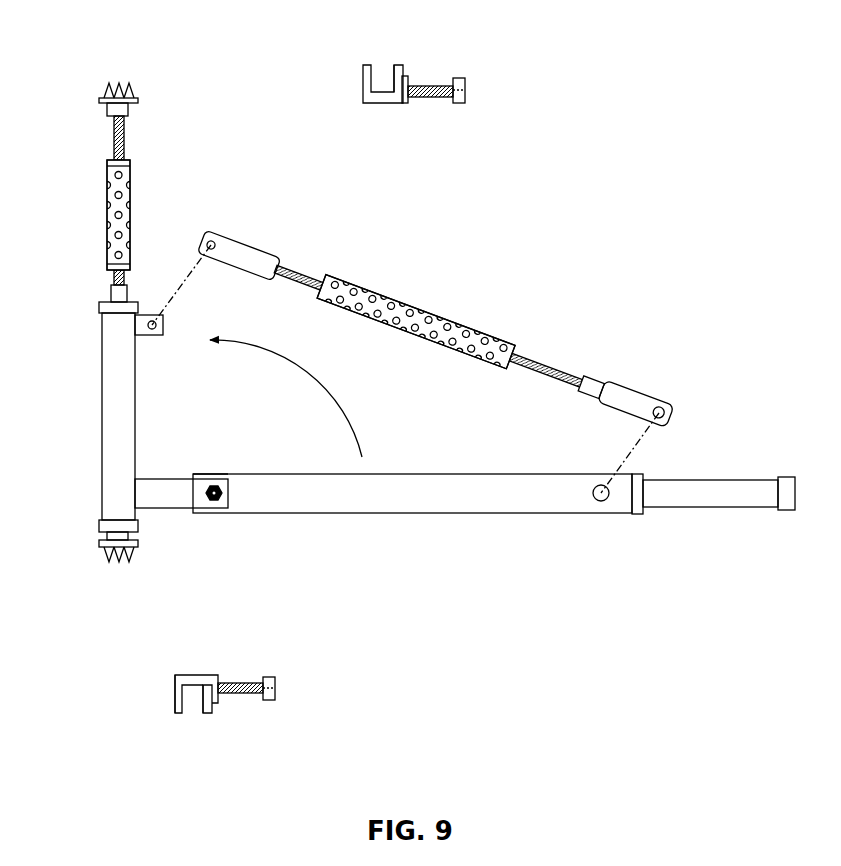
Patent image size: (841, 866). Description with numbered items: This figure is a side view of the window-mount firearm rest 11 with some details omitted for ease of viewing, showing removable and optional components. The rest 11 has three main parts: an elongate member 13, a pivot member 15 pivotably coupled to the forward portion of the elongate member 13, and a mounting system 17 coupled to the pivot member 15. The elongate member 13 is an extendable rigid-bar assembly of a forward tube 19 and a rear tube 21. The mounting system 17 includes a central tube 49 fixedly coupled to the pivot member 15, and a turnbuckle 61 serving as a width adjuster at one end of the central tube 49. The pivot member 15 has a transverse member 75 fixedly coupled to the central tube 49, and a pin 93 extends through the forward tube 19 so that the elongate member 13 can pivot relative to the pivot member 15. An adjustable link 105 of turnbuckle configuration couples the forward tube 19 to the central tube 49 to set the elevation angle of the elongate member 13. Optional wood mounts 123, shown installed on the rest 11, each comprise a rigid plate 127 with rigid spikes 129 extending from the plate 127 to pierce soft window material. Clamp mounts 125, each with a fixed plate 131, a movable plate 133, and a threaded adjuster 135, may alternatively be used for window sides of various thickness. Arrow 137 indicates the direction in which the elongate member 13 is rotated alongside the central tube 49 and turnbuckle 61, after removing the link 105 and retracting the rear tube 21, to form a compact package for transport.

The window-mount firearm rest 11 is at (580, 247).
The elongate member 13 is at (488, 514).
The pivot member 15 is at (184, 514).
The mounting system 17 is at (135, 184).
The forward tube 19 is at (555, 503).
The rear tube 21 is at (707, 499).
The central tube 49 is at (110, 447).
The turnbuckle 61 is at (103, 243).
The transverse member 75 is at (163, 483).
The pin 93 is at (216, 485).
The adjustable link 105 is at (422, 305).
The wood mount 123 is at (126, 323).
The clamp mount 125 is at (296, 392).
The rigid plate 127 is at (138, 100).
The rigid spikes 129 is at (131, 90).
The fixed plate 131 is at (368, 64).
The movable plate 133 is at (397, 65).
The threaded adjuster 135 is at (429, 86).
The arrow 137 is at (362, 457).